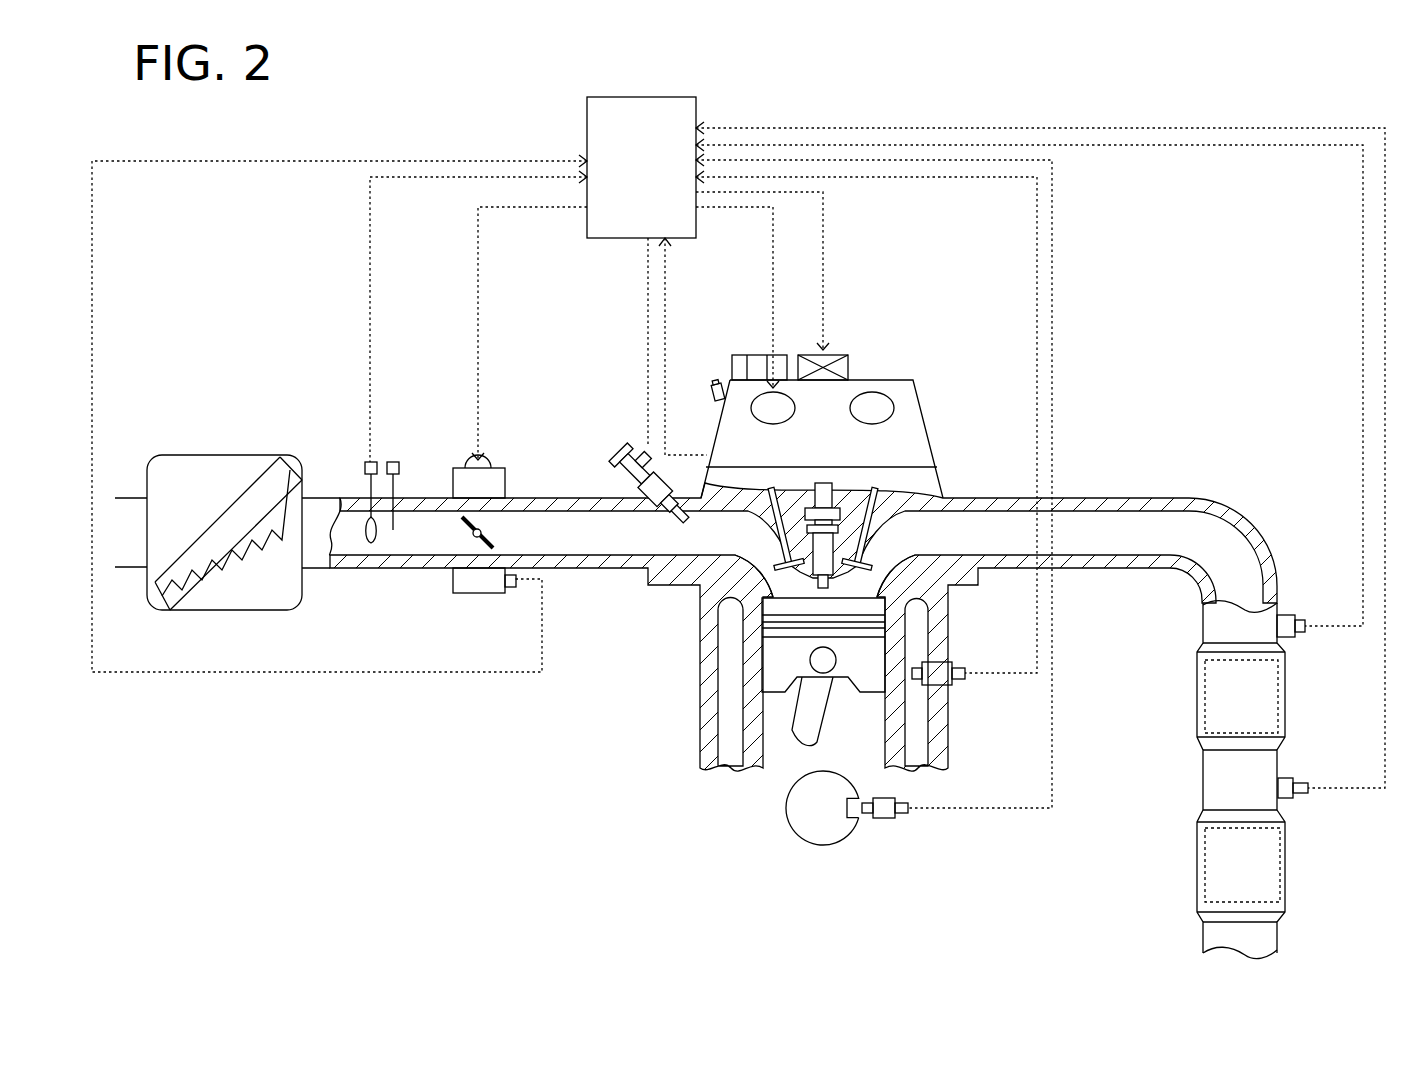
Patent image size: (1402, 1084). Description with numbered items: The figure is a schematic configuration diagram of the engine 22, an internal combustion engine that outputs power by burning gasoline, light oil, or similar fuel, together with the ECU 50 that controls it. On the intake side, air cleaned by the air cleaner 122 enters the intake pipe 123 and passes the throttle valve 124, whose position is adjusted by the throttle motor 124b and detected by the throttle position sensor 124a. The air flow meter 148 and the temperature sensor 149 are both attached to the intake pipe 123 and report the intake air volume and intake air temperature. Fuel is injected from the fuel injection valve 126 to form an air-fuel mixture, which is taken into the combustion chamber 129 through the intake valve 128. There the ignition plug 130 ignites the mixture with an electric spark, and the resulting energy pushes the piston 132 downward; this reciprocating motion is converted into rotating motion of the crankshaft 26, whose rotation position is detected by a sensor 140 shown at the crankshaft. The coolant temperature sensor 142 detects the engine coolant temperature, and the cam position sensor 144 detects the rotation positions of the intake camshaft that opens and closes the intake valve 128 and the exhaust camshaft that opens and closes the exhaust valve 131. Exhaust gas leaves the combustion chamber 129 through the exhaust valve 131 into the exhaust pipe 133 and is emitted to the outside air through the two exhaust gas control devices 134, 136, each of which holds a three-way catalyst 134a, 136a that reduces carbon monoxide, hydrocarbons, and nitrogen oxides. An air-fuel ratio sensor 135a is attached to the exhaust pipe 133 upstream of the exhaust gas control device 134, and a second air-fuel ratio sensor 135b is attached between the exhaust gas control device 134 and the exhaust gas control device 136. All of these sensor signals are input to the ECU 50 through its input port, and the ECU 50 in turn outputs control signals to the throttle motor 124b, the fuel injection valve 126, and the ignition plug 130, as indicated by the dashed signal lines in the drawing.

The ECU 50 is at (640, 97).
The engine 22 is at (911, 323).
The air cleaner 122 is at (228, 455).
The intake pipe 123 is at (385, 568).
The throttle valve 124 is at (467, 525).
The throttle position sensor 124a is at (479, 594).
The throttle motor 124b is at (498, 466).
The fuel injection valve 126 is at (622, 447).
The intake valve 128 is at (790, 570).
The combustion chamber 129 is at (813, 590).
The ignition plug 130 is at (822, 555).
The exhaust valve 131 is at (858, 572).
The piston 132 is at (780, 655).
The exhaust pipe 133 is at (973, 498).
The exhaust gas control device 134 is at (1197, 722).
The catalyst 134a is at (1197, 704).
The air-fuel ratio sensor 135a is at (1298, 617).
The air-fuel ratio sensor 135b is at (1303, 778).
The exhaust gas control device 136 is at (1197, 893).
The catalyst 136a is at (1197, 877).
The crank angle sensor 140 is at (885, 820).
The coolant temperature sensor 142 is at (958, 688).
The cam position sensor 144 is at (716, 385).
The air flow meter 148 is at (364, 466).
The temperature sensor 149 is at (399, 466).
The crankshaft 26 is at (785, 808).